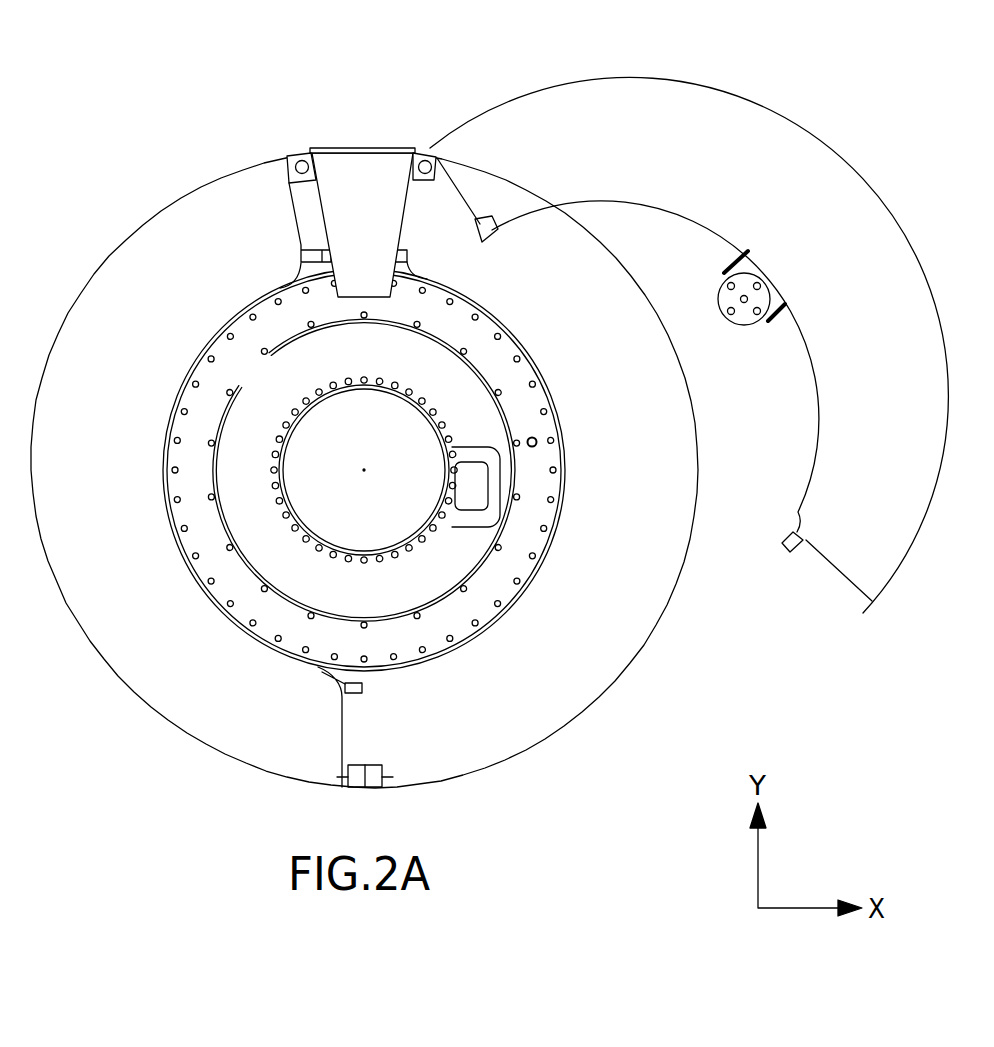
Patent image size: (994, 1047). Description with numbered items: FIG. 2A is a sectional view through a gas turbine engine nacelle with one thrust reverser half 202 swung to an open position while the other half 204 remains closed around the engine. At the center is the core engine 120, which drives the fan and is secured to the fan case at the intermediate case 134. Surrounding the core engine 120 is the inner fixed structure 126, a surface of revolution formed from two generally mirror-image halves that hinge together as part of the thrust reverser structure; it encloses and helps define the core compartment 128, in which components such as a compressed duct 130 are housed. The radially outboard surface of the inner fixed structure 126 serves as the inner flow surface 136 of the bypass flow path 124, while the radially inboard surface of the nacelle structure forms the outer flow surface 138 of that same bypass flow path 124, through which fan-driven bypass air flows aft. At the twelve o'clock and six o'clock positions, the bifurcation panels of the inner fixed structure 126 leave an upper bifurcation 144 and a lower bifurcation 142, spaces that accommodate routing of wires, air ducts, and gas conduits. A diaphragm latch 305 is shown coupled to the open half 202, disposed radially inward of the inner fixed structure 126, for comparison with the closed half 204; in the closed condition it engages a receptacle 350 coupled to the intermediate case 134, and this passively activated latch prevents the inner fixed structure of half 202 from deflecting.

The half 202 is at (801, 122).
The half 204 is at (364, 440).
The bypass flow path 124 is at (120, 472).
The inner fixed structure 126 is at (188, 368).
The core compartment 128 is at (270, 384).
The core engine 120 is at (427, 418).
The compressed duct 130 is at (497, 467).
The intermediate case 134 is at (283, 630).
The inner flow surface 136 is at (205, 604).
The outer flow surface 138 is at (62, 601).
The lower bifurcation 142 is at (373, 733).
The upper bifurcation 144 is at (306, 212).
The diaphragm latch 305 is at (769, 303).
The receptacle 350 is at (537, 439).